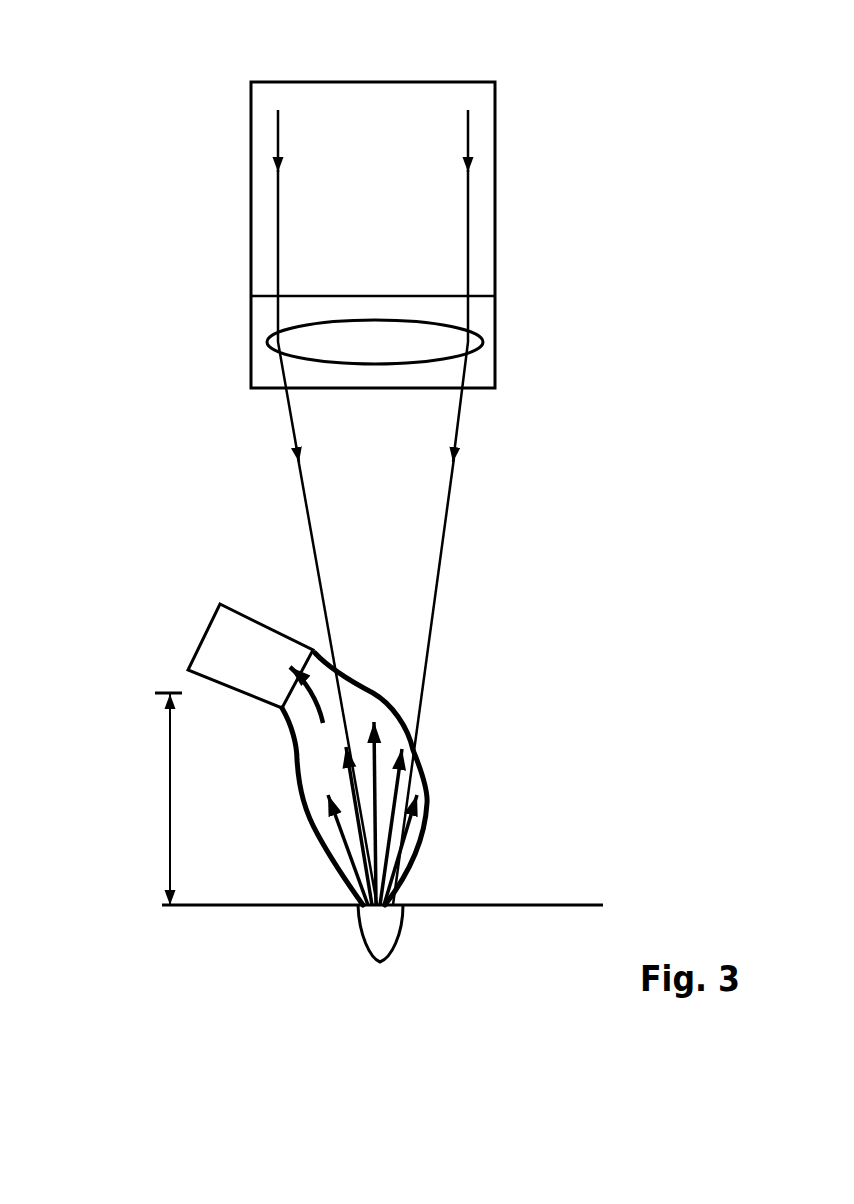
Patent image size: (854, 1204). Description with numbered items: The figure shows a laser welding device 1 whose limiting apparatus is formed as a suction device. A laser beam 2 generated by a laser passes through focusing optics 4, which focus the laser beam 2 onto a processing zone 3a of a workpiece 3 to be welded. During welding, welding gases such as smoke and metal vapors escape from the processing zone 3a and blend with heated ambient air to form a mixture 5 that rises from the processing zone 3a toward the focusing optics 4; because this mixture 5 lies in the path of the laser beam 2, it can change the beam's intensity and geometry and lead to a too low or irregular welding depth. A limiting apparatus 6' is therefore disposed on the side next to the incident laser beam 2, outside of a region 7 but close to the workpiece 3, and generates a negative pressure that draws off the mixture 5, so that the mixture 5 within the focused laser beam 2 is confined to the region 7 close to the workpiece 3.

The laser welding device 1 is at (641, 191).
The laser beam 2 is at (468, 122).
The workpiece 3 is at (542, 903).
The processing zone 3a is at (372, 923).
The focusing optics 4 is at (488, 313).
The mixture 5 is at (423, 757).
The limiting apparatus 6' is at (204, 663).
The region 7 is at (170, 808).